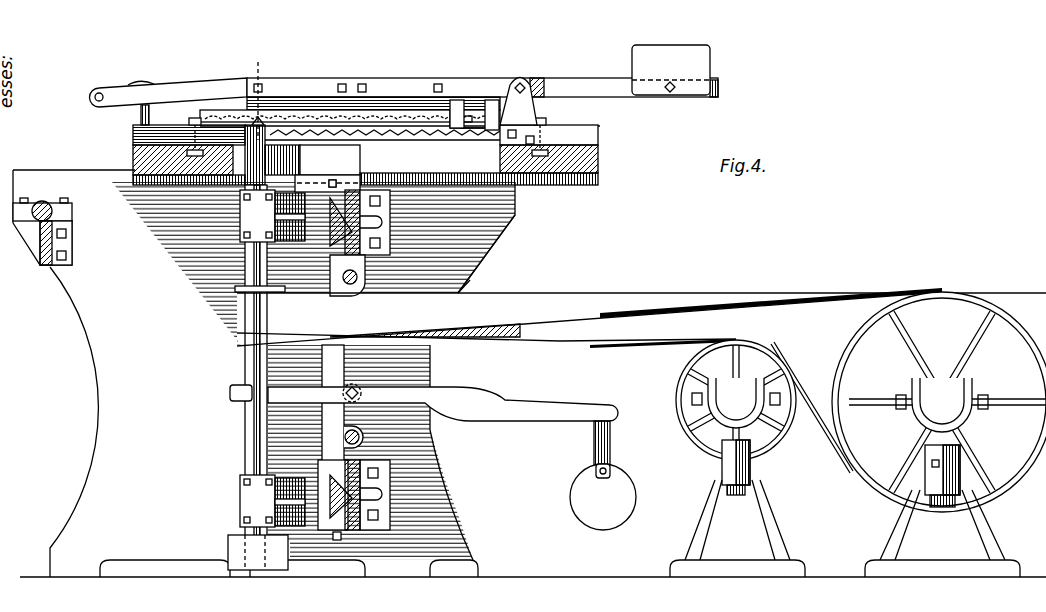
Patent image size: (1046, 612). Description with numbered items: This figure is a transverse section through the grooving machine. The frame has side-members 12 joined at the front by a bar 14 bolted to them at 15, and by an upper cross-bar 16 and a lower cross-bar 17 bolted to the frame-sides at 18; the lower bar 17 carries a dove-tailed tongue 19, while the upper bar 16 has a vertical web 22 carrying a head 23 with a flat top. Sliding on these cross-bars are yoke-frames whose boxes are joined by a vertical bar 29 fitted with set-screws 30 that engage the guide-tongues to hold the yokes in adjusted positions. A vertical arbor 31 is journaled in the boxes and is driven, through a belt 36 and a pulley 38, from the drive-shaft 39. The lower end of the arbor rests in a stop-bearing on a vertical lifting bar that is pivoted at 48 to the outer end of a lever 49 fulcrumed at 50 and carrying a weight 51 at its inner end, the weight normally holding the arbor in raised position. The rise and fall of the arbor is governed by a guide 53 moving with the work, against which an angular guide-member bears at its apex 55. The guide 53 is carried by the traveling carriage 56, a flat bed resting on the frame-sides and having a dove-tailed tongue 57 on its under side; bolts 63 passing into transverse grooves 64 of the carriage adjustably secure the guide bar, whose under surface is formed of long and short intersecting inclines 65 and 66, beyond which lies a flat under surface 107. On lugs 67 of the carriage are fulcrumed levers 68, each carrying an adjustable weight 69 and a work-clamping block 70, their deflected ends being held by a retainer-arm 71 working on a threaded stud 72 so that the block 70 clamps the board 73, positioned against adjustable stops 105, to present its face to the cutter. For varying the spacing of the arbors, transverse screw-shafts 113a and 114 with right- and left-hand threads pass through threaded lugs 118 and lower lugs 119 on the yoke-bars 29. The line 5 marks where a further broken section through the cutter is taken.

The section line 5 is at (288, 65).
The side-member 12 is at (120, 325).
The bar 14 is at (40, 262).
The bolts 15 is at (40, 240).
The upper cross-bar 16 is at (395, 213).
The lower cross-bar 17 is at (378, 472).
The bolts 18 is at (470, 270).
The dove-tailed tongue 19 is at (343, 500).
The vertical web 22 is at (318, 252).
The head 23 is at (336, 183).
The vertically extending bar 29 is at (337, 357).
The set-screws 30 is at (333, 180).
The arbor 31 is at (250, 265).
The belt 36 is at (800, 292).
The pulley 38 is at (924, 417).
The drive-shaft 39 is at (928, 398).
The pivot 48 is at (242, 392).
The lever 49 is at (400, 406).
The fulcrum 50 is at (370, 388).
The weight 51 is at (585, 508).
The guide 53 is at (452, 112).
The apex 55 is at (257, 125).
The traveling carriage 56 is at (133, 158).
The dove-tailed tongue 57 is at (563, 186).
The bolts 63 is at (193, 120).
The transverse parallel grooves 64 is at (168, 185).
The long inclined surfaces 65 is at (385, 137).
The short inclined surfaces 66 is at (465, 139).
The lugs 67 is at (528, 96).
The lever 68 is at (405, 80).
The weight 69 is at (653, 55).
The work-clamping block 70 is at (300, 97).
The retainer-arm 71 is at (145, 82).
The threaded stud 72 is at (140, 112).
The board 73 is at (313, 118).
The adjustable stops 105 is at (469, 112).
The flat under side surface 107 is at (493, 118).
The screw-shaft 113a is at (368, 277).
The screw-shaft 114 is at (344, 437).
The lugs 118 is at (462, 290).
The lower lugs 119 is at (375, 465).